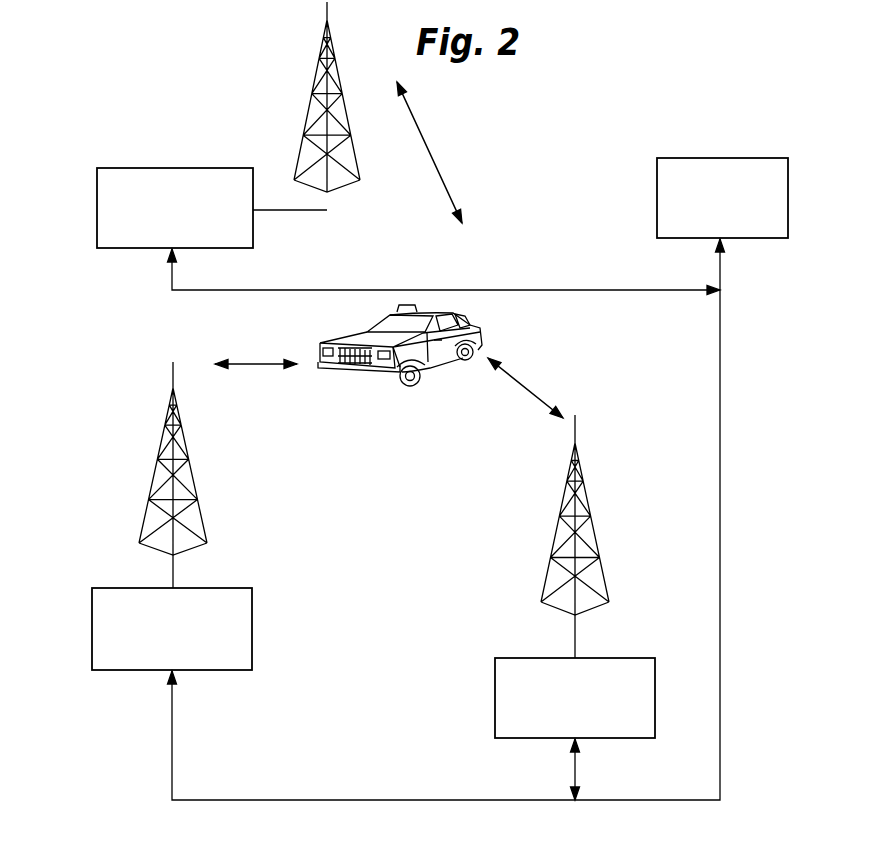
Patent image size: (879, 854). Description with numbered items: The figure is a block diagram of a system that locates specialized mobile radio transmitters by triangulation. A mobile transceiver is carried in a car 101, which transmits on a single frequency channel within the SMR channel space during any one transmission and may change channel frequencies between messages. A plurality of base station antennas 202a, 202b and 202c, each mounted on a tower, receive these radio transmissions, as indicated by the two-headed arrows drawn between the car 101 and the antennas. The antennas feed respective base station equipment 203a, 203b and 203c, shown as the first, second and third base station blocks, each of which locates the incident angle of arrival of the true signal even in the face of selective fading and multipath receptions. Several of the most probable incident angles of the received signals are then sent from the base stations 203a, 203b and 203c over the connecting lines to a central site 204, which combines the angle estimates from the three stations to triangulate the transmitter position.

The car 101 is at (390, 374).
The base station antenna 202a is at (199, 511).
The base station antenna 202b is at (316, 78).
The base station antenna 202c is at (565, 493).
The base station equipment 203a is at (252, 608).
The base station equipment 203b is at (495, 666).
The base station equipment 203c is at (96, 201).
The central site 204 is at (657, 173).